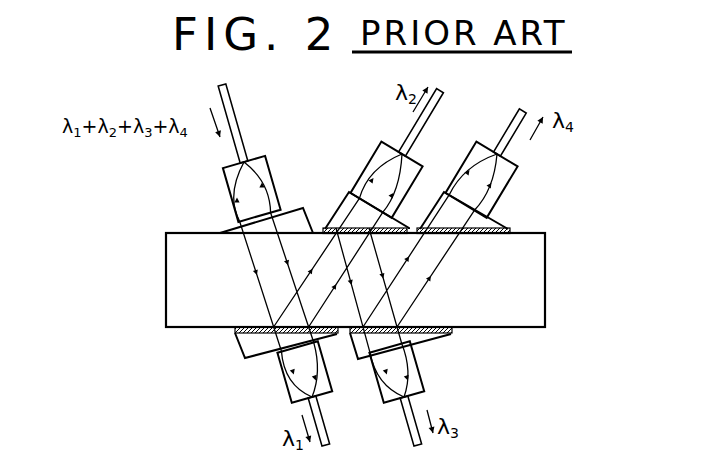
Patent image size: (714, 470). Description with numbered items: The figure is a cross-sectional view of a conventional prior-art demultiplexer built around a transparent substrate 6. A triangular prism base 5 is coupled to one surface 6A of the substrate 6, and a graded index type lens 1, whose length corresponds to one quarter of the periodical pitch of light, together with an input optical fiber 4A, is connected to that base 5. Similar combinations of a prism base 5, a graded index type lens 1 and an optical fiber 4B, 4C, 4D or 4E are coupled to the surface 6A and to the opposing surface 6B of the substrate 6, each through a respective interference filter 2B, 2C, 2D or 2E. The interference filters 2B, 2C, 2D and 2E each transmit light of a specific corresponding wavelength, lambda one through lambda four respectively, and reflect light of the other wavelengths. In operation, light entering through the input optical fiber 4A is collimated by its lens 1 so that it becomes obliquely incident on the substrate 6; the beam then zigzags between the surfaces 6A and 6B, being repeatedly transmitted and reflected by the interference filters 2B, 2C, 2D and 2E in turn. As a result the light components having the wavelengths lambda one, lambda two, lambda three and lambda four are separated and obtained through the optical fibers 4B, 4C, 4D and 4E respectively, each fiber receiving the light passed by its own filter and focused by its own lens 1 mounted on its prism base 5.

The graded index type lens 1 is at (262, 166).
The triangular prism base 5 is at (233, 228).
The transparent substrate 6 is at (530, 278).
The one surface of the transparent substrate 6A is at (180, 233).
The opposing surface of the substrate 6B is at (527, 329).
The interference filter 2B is at (240, 334).
The interference filter 2C is at (323, 228).
The interference filter 2D is at (450, 332).
The interference filter 2E is at (510, 229).
The input optical fiber 4A is at (237, 108).
The optical fiber 4B is at (330, 433).
The optical fiber 4C is at (443, 93).
The optical fiber 4D is at (417, 433).
The optical fiber 4E is at (521, 108).